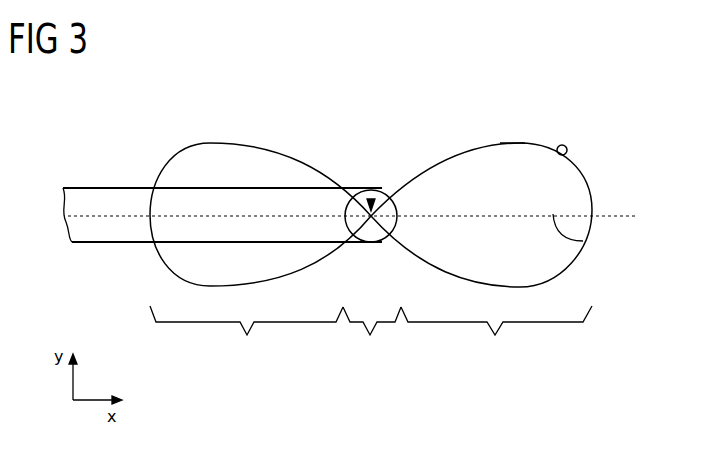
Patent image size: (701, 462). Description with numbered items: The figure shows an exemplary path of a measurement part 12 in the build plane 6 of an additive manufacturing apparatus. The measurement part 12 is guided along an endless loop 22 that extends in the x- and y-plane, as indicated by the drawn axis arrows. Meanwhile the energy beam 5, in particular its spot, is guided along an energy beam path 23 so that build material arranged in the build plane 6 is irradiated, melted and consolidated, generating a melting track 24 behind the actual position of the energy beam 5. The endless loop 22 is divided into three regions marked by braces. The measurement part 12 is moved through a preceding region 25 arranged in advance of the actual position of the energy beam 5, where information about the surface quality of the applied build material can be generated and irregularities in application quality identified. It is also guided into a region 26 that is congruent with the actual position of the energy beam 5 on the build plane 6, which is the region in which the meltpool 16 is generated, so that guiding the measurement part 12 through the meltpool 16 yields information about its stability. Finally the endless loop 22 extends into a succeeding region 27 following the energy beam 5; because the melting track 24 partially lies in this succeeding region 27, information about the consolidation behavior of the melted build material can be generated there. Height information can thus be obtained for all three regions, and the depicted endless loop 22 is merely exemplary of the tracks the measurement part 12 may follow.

The build plane 6 is at (319, 97).
The energy beam 5 is at (386, 190).
The meltpool 16 is at (370, 199).
The melting track 24 is at (113, 187).
The endless loop 22 is at (511, 142).
The measurement part 12 is at (562, 145).
The energy beam path 23 is at (583, 241).
The preceding region 25 is at (496, 338).
The region congruent with the energy beam position 26 is at (372, 338).
The succeeding region 27 is at (246, 338).